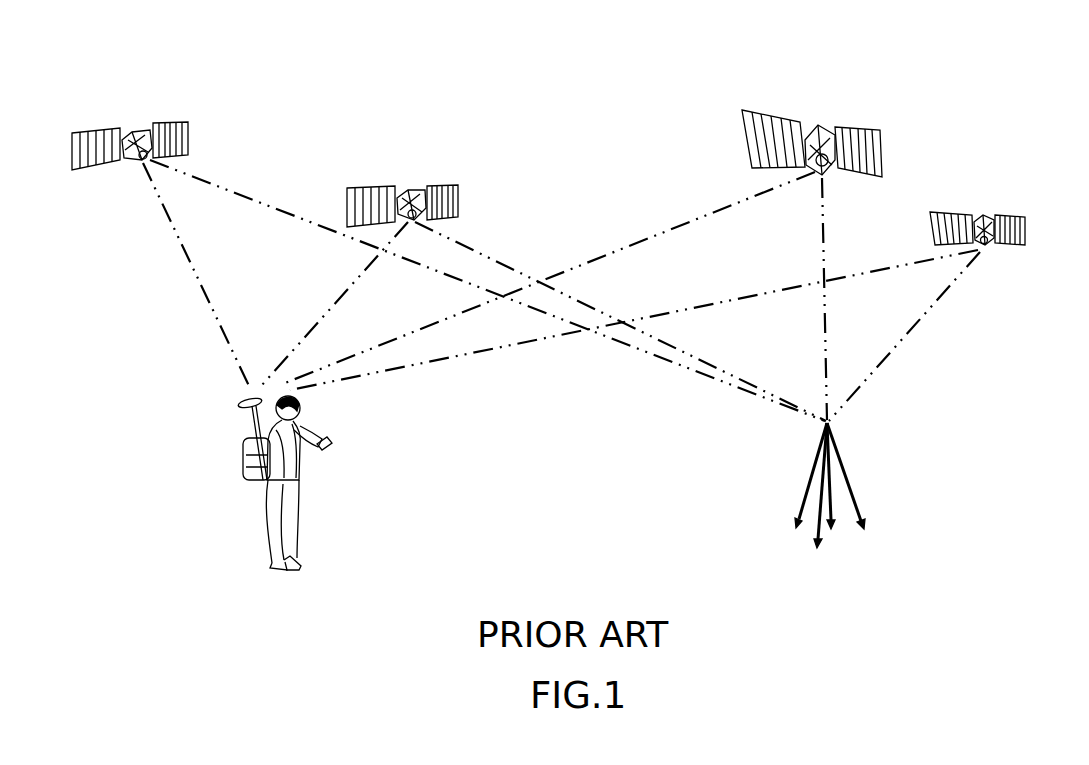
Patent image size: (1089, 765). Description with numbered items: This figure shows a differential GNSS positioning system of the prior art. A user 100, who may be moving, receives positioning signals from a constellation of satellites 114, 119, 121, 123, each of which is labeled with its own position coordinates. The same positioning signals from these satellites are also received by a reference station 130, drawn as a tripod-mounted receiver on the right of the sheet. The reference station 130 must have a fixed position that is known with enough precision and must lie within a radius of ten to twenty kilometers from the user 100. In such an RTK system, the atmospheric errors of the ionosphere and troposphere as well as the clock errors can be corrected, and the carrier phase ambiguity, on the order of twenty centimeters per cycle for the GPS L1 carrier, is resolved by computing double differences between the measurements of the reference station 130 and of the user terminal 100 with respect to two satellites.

The user 100 is at (260, 484).
The satellite 114 is at (817, 127).
The satellite 119 is at (418, 187).
The satellite 121 is at (1008, 210).
The satellite 123 is at (133, 132).
The reference station 130 is at (805, 534).